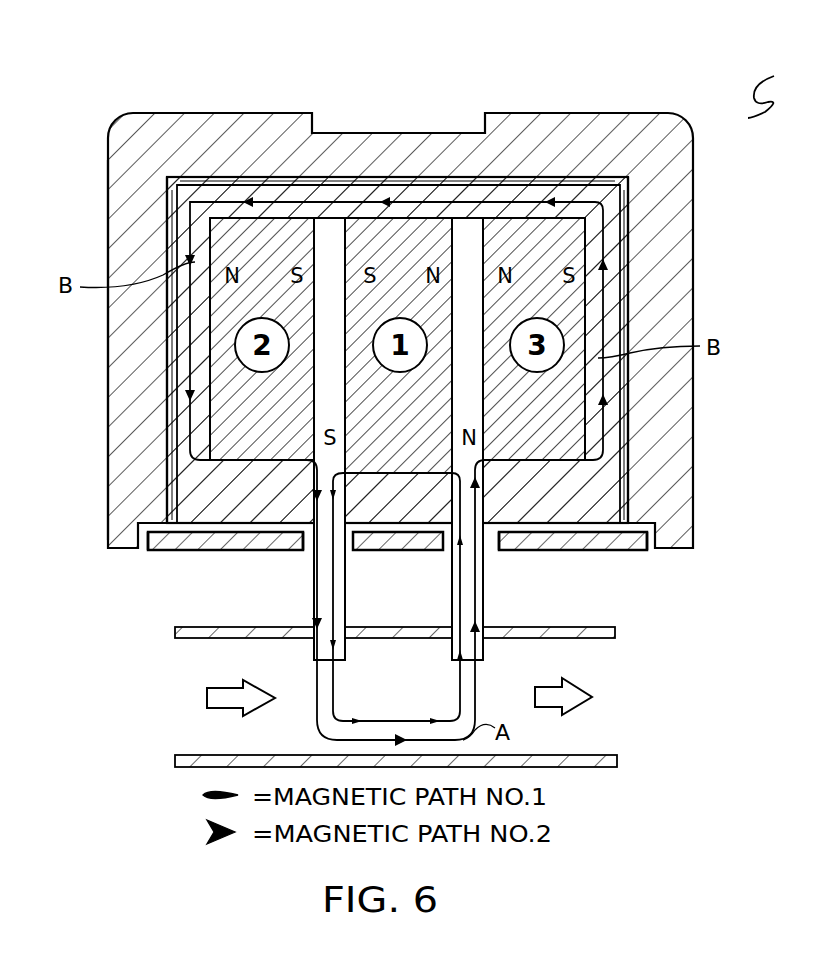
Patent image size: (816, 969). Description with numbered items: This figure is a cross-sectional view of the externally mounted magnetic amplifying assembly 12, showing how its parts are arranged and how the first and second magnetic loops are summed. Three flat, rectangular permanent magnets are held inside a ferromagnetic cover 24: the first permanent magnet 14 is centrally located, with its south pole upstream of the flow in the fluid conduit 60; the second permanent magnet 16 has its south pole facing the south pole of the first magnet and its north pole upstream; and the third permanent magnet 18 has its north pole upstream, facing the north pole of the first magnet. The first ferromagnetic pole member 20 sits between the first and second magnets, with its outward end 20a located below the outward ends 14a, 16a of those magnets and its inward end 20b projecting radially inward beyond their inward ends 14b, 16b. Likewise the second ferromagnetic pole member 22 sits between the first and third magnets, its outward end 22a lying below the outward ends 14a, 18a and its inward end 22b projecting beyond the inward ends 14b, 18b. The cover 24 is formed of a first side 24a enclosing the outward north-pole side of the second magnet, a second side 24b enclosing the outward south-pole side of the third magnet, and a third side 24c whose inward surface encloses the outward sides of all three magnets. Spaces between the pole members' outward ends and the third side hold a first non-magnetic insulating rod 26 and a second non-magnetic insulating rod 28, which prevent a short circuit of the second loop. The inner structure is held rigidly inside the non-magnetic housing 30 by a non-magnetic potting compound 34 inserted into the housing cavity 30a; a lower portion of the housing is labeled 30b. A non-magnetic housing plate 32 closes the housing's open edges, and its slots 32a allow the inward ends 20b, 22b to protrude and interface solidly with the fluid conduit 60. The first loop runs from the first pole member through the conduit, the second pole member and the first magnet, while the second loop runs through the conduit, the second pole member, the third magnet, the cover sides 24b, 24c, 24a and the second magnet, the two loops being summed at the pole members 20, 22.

The magnetic amplifying assembly 12 is at (775, 86).
The first permanent magnet 14 is at (420, 235).
The outward end of first permanent magnet 14a is at (385, 220).
The inward end of first permanent magnet 14b is at (393, 534).
The second permanent magnet 16 is at (285, 218).
The outward end of second permanent magnet 16a is at (292, 217).
The inward end of second permanent magnet 16b is at (193, 548).
The third permanent magnet 18 is at (557, 250).
The outward end of third permanent magnet 18a is at (548, 218).
The inward end of third permanent magnet 18b is at (573, 540).
The first ferromagnetic pole member 20 is at (325, 392).
The outward end of first ferromagnetic pole member 20a is at (332, 240).
The inward end of first ferromagnetic pole member 20b is at (312, 650).
The second ferromagnetic pole member 22 is at (487, 395).
The outward end of second ferromagnetic pole member 22a is at (467, 230).
The inward end of second ferromagnetic pole member 22b is at (485, 645).
The ferromagnetic cover 24 is at (467, 197).
The first side of ferromagnetic cover 24a is at (187, 232).
The second side of ferromagnetic cover 24b is at (617, 400).
The third side of ferromagnetic cover 24c is at (208, 180).
The first non-magnetic insulating rod 26 is at (330, 225).
The second non-magnetic insulating rod 28 is at (480, 245).
The non-magnetic housing 30 is at (660, 203).
The housing cavity 30a is at (160, 355).
The bottom of housing 30b is at (745, 568).
The non-magnetic housing plate 32 is at (155, 551).
The slots 32a is at (301, 551).
The non-magnetic potting compound 34 is at (135, 165).
The fluid conduit 60 is at (615, 630).